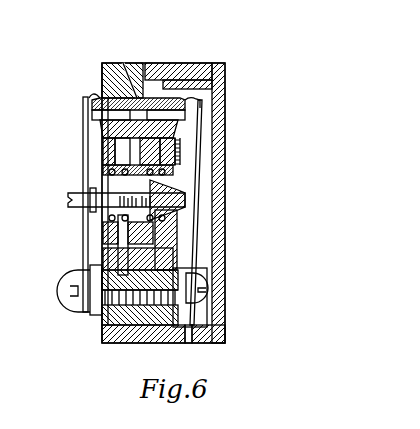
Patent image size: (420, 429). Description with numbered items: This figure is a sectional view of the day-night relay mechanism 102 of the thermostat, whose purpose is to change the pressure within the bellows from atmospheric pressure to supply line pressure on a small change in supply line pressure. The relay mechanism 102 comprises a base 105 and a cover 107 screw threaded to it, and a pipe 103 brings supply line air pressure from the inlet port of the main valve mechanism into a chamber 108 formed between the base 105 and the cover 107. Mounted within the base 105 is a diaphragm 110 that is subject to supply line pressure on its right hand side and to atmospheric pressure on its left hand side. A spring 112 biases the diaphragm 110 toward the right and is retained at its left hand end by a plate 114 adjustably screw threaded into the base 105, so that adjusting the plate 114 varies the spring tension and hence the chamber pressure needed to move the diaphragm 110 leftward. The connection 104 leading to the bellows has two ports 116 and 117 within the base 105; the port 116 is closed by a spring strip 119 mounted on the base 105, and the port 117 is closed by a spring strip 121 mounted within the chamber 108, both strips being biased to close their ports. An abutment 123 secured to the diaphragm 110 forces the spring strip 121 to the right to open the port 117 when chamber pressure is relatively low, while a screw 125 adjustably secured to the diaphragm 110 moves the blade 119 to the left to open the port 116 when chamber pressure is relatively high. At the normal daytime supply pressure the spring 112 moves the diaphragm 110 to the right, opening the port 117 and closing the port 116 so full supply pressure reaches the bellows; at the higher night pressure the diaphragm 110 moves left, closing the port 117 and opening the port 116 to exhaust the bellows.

The day-night relay mechanism 102 is at (234, 162).
The pipe 103 is at (184, 340).
The pipe 104 is at (122, 63).
The base 105 is at (102, 332).
The cover 107 is at (220, 228).
The chamber 108 is at (218, 87).
The diaphragm 110 is at (176, 149).
The spring 112 is at (103, 165).
The plate 114 is at (103, 232).
The port 116 is at (95, 97).
The port 117 is at (205, 97).
The spring strip 119 is at (83, 121).
The spring strip 121 is at (222, 128).
The abutment 123 is at (190, 210).
The screw 125 is at (76, 193).